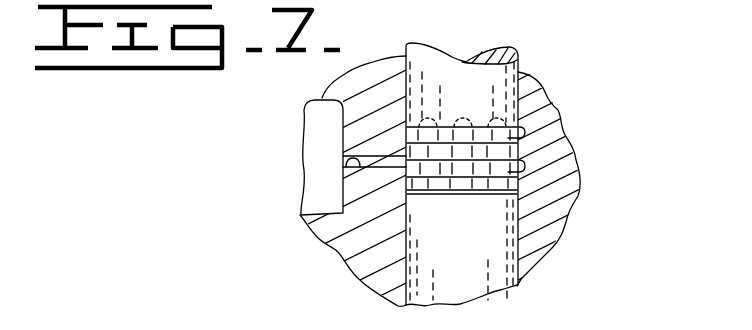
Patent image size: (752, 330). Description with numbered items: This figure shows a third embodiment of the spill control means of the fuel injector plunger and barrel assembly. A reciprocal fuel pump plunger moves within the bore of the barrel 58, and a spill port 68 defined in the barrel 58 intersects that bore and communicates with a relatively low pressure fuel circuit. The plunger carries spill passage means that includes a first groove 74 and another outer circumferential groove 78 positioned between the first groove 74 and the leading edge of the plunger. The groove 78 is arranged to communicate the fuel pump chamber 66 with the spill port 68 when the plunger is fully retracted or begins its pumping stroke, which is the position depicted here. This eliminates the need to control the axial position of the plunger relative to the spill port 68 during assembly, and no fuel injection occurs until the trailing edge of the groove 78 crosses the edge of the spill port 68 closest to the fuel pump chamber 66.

The barrel 58 is at (559, 238).
The fuel pump chamber 66 is at (474, 266).
The spill port 68 is at (343, 165).
The first groove 74 is at (525, 132).
The outer circumferential groove 78 is at (525, 168).